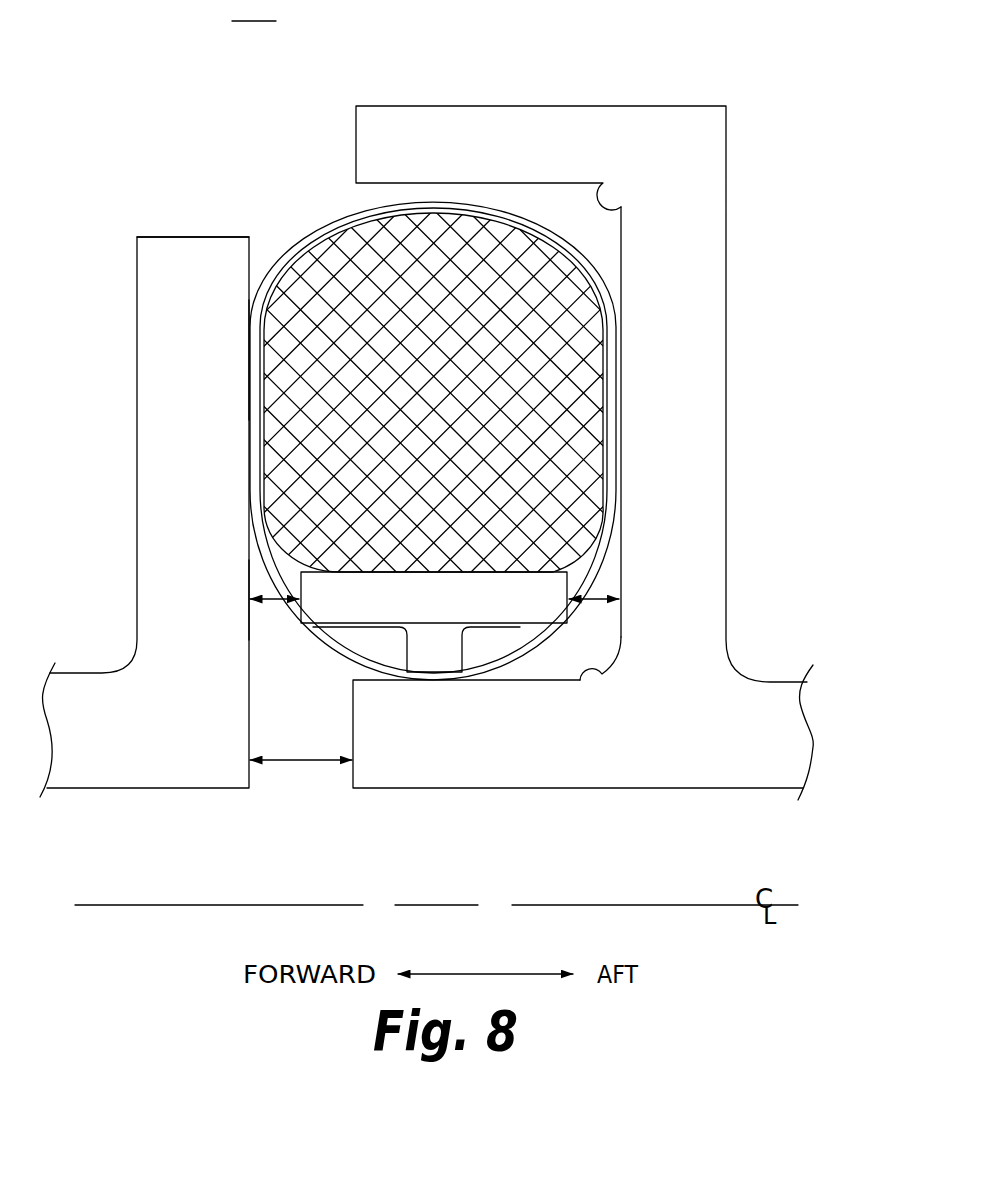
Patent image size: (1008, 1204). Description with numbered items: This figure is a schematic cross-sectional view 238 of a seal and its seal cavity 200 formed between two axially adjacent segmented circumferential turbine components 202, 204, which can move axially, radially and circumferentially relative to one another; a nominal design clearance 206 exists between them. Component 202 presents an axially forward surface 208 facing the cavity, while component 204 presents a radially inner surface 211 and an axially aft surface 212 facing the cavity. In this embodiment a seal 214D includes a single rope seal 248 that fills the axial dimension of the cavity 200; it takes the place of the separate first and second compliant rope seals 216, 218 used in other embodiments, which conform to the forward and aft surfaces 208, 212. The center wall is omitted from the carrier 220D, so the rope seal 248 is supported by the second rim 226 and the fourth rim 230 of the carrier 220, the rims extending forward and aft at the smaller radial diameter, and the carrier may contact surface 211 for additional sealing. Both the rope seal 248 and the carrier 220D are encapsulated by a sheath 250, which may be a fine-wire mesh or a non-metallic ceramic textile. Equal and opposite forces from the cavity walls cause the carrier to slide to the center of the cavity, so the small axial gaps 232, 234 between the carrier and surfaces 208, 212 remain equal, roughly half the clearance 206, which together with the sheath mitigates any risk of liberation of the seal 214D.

The seal assembly view 238 is at (254, 11).
The seal cavity 200 is at (327, 106).
The seal 214D is at (273, 178).
The carrier 220 is at (433, 200).
The sheath 250 is at (508, 217).
The axially aft surface 212 is at (605, 186).
The axially forward surface 208 is at (249, 241).
The second compliant seal 218 is at (597, 293).
The first compliant seal 216 is at (315, 372).
The single rope seal 248 is at (523, 392).
The second rim 226 is at (363, 587).
The fourth rim 230 is at (518, 592).
The axial gap 232 is at (277, 604).
The axial gap 234 is at (622, 604).
The turbine component 202 is at (115, 788).
The nominal design clearance 206 is at (300, 762).
The turbine component 204 is at (463, 790).
The carrier 220D is at (522, 630).
The radially inner surface 211 is at (601, 670).